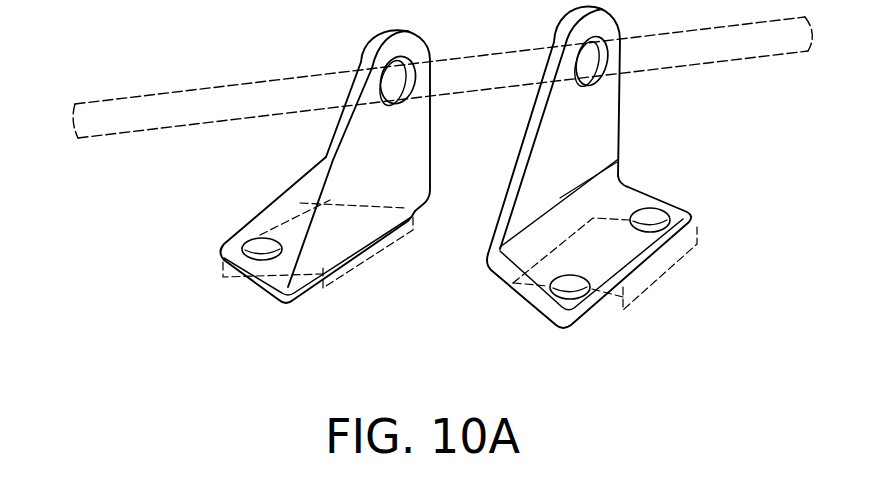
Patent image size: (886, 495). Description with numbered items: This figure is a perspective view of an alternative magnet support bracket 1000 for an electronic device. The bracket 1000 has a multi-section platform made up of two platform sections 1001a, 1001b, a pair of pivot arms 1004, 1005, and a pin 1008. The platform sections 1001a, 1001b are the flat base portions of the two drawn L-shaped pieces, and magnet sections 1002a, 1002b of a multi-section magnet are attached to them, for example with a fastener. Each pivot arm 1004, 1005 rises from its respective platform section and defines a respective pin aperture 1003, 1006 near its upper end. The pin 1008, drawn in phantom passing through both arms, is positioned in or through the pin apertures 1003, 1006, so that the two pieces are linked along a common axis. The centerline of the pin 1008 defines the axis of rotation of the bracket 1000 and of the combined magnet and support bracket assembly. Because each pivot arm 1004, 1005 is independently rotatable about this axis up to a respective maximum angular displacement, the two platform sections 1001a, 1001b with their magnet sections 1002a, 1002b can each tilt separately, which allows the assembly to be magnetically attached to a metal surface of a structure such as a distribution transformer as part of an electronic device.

The magnet support bracket 1000 is at (435, 191).
The platform section 1001a is at (286, 173).
The magnet section 1002a is at (350, 274).
The pin aperture 1003 is at (390, 83).
The pivot arm 1004 is at (321, 158).
The platform section 1001b is at (667, 167).
The magnet section 1002b is at (702, 232).
The pivot arm 1005 is at (620, 130).
The pin aperture 1006 is at (588, 60).
The pin 1008 is at (102, 118).